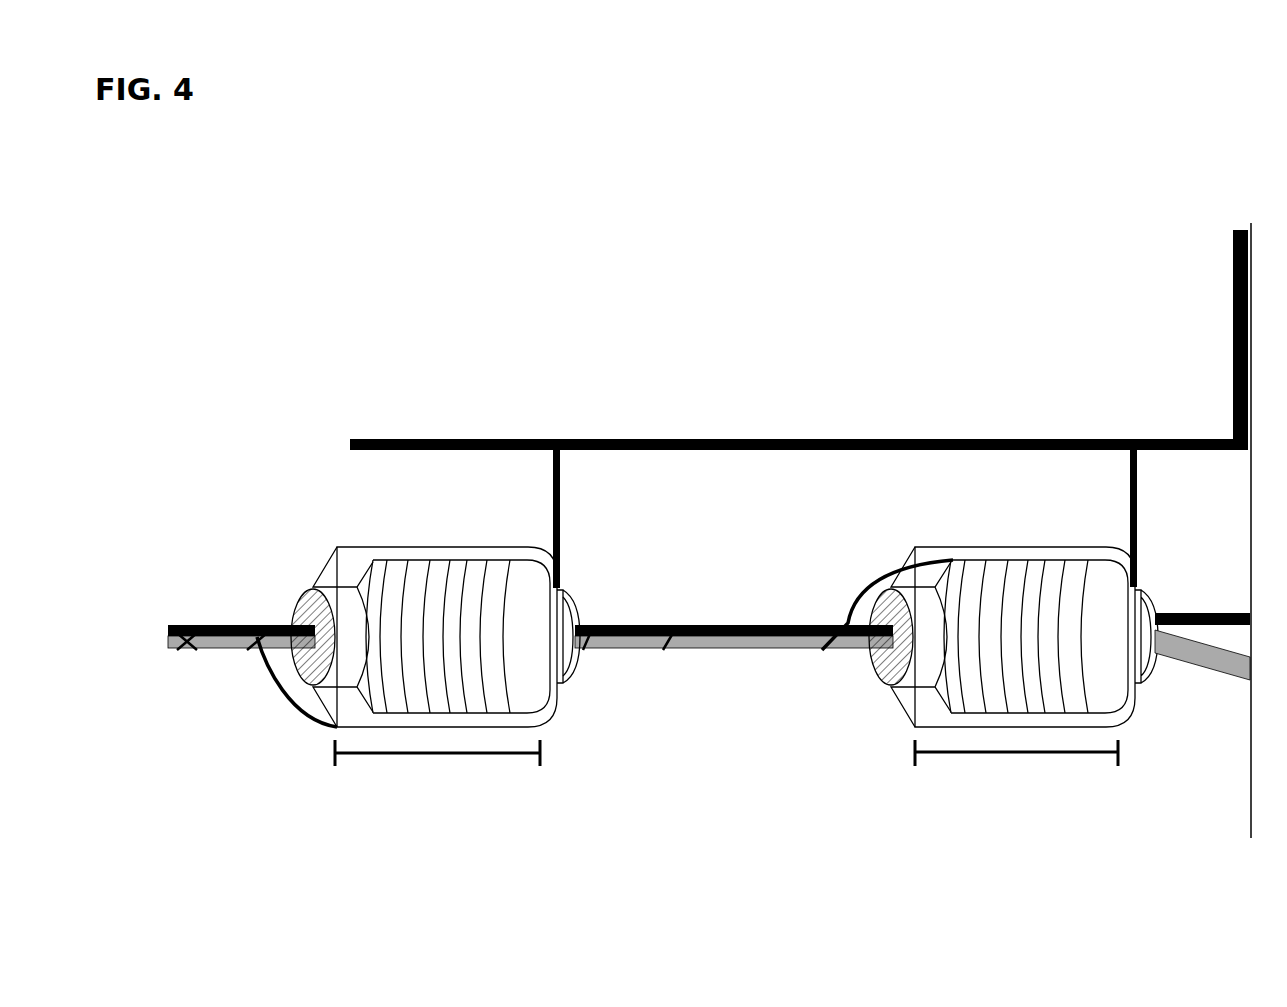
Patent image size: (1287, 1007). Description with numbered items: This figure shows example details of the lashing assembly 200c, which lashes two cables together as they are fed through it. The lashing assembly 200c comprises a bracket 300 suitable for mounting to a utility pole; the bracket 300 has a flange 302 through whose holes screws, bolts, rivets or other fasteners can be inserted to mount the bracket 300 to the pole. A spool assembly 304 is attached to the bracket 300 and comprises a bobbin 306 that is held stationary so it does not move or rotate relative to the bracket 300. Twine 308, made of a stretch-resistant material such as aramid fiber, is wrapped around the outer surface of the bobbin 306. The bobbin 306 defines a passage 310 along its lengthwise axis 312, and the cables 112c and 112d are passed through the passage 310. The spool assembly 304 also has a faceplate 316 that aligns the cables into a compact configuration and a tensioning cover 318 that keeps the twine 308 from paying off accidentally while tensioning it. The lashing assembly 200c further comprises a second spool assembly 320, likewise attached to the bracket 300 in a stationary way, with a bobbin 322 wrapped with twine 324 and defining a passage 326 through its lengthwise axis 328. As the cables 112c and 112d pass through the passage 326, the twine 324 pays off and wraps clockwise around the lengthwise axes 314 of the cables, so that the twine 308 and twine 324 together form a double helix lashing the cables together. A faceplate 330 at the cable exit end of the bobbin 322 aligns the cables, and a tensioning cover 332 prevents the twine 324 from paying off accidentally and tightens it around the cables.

The lashing assembly 200c is at (625, 237).
The bracket 300 is at (650, 440).
The flange 302 is at (1235, 313).
The spool assembly 304 is at (1052, 626).
The bobbin 306 is at (912, 677).
The twine 308 is at (1040, 560).
The passage 310 is at (1152, 667).
The lengthwise axis 312 is at (1016, 761).
The lengthwise axes 314 is at (162, 637).
The faceplate 316 is at (860, 773).
The tensioning cover 318 is at (942, 548).
The spool assembly 320 is at (445, 613).
The bobbin 322 is at (575, 612).
The twine 324 is at (383, 562).
The passage 326 is at (573, 667).
The lengthwise axis 328 is at (437, 747).
The faceplate 330 is at (303, 665).
The tensioning cover 332 is at (467, 550).
The cable 112c is at (1228, 672).
The cable 112d is at (1188, 613).